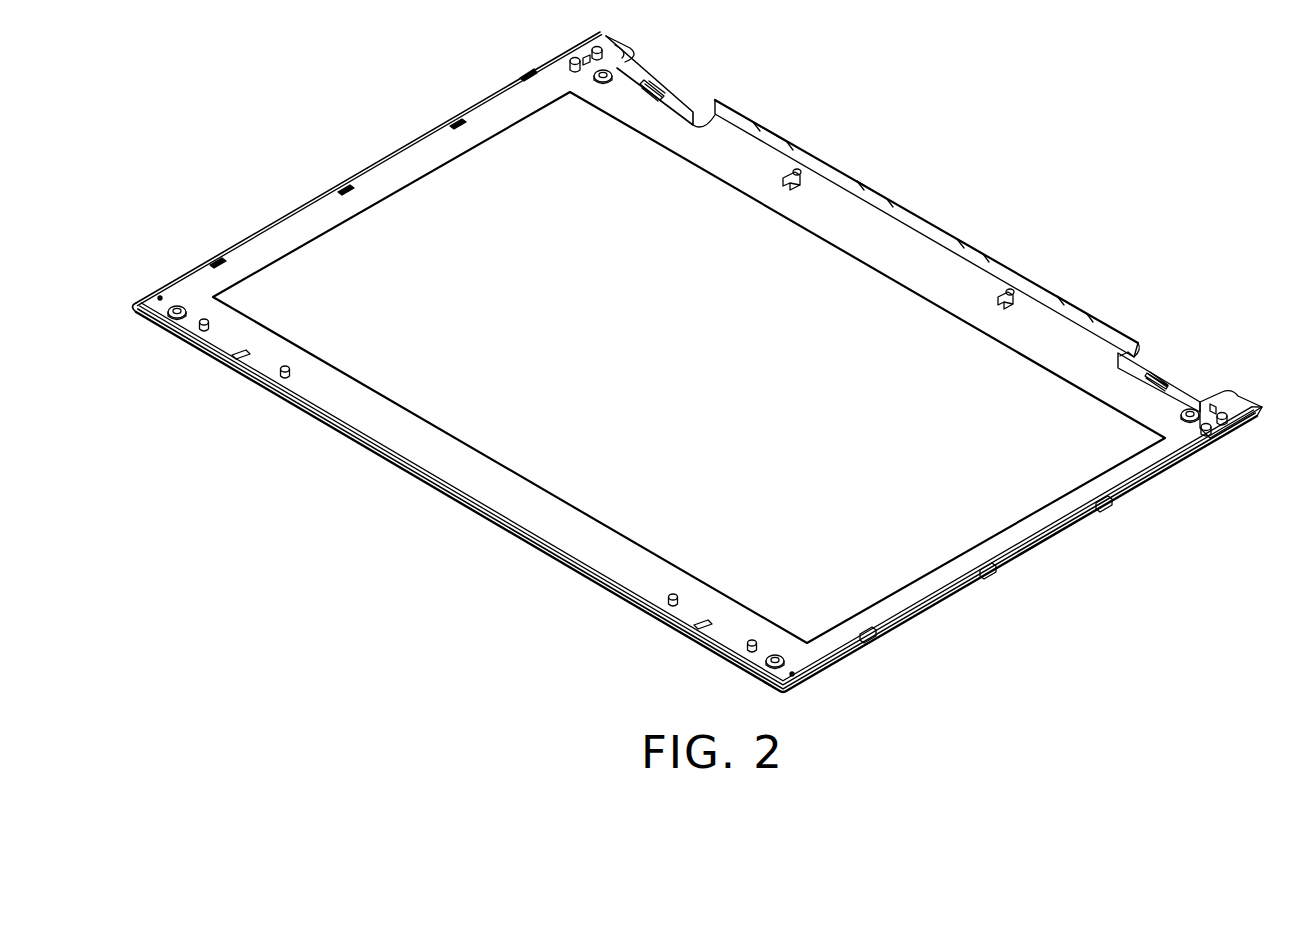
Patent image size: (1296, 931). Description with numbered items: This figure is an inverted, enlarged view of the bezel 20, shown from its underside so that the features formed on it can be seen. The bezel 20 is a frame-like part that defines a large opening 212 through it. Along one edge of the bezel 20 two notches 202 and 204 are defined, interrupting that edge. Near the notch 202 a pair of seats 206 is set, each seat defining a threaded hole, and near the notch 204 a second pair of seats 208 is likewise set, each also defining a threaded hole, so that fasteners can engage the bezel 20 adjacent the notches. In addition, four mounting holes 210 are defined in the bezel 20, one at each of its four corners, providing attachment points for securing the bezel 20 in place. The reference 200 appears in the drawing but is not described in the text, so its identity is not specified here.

The bezel 20 is at (962, 188).
The sidewall 200 is at (740, 156).
The notch 202 is at (1155, 365).
The notch 204 is at (680, 90).
The seats 206 is at (1215, 440).
The seats 208 is at (582, 62).
The mounting holes 210 is at (177, 308).
The opening 212 is at (432, 212).